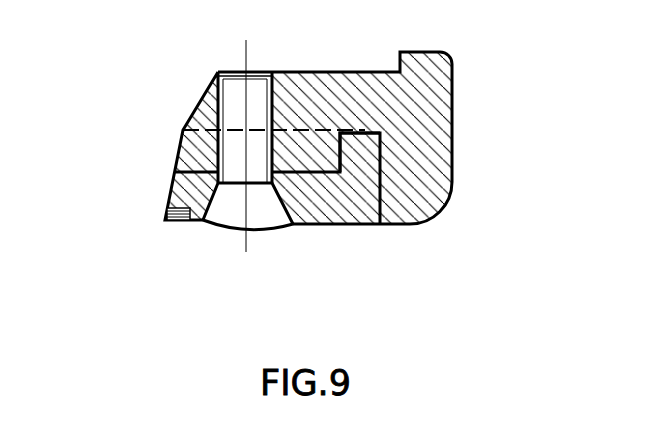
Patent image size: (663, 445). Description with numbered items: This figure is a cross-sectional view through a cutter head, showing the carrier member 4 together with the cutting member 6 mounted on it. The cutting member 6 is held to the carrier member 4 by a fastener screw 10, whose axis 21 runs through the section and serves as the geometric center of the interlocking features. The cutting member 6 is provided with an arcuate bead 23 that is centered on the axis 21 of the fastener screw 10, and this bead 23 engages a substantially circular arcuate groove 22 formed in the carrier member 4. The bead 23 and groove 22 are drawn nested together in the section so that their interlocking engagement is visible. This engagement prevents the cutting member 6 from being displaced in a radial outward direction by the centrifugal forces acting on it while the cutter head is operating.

The carrier member 4 is at (413, 102).
The cutting member 6 is at (188, 193).
The fastener screw 10 is at (229, 201).
The axis 21 is at (247, 234).
The arcuate groove 22 is at (370, 130).
The arcuate bead 23 is at (353, 160).